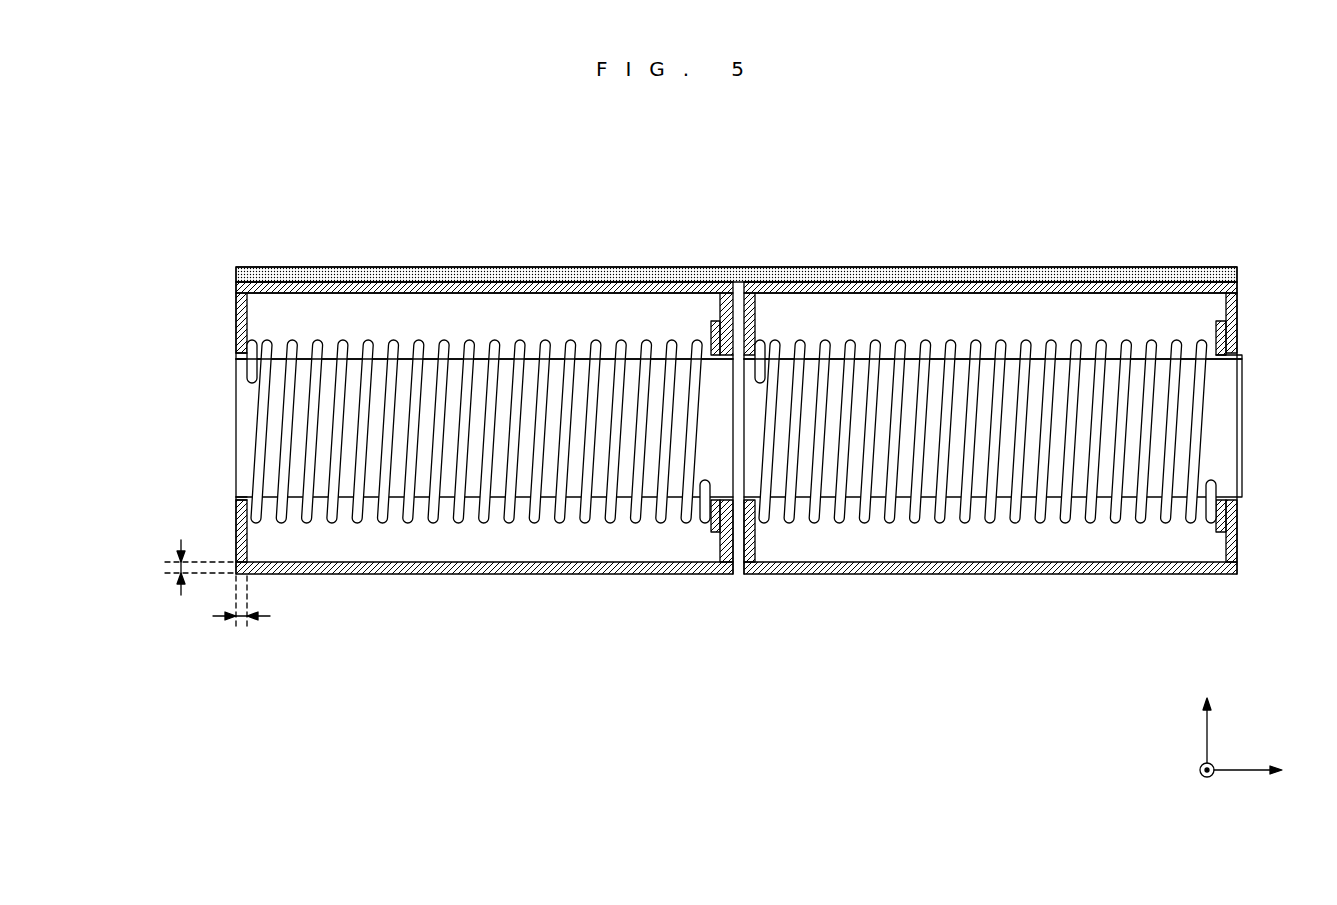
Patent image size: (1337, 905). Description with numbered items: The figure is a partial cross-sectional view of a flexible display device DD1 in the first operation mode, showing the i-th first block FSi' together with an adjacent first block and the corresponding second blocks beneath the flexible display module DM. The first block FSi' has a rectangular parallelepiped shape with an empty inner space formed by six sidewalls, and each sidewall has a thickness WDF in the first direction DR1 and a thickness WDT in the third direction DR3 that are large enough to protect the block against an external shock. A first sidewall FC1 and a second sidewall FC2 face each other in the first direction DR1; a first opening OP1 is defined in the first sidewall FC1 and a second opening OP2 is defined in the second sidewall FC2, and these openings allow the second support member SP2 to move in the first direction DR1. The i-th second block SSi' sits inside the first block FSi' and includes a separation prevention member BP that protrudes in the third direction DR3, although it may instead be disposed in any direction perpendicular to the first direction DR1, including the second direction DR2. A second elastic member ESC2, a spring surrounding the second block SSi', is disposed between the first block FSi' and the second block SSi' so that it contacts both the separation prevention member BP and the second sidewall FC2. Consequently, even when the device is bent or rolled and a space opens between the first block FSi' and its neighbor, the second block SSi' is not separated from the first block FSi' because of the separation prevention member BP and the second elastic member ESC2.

The flexible display device DD1 is at (1214, 141).
The flexible display module DM is at (1193, 268).
The second sidewall FC2 is at (248, 311).
The first sidewall FC1 is at (718, 538).
The i-th first block FSi' is at (484, 267).
The separation prevention member BP is at (711, 333).
The second elastic member ESC2 is at (396, 345).
The i-th second block SSi' is at (478, 521).
The second support member SP2 is at (475, 698).
The first opening OP1 is at (738, 497).
The second opening OP2 is at (247, 353).
The thickness in the third direction WDT is at (179, 567).
The thickness in the first direction WDF is at (242, 616).
The first direction DR1 is at (1272, 770).
The second direction DR2 is at (1210, 786).
The third direction DR3 is at (1210, 717).